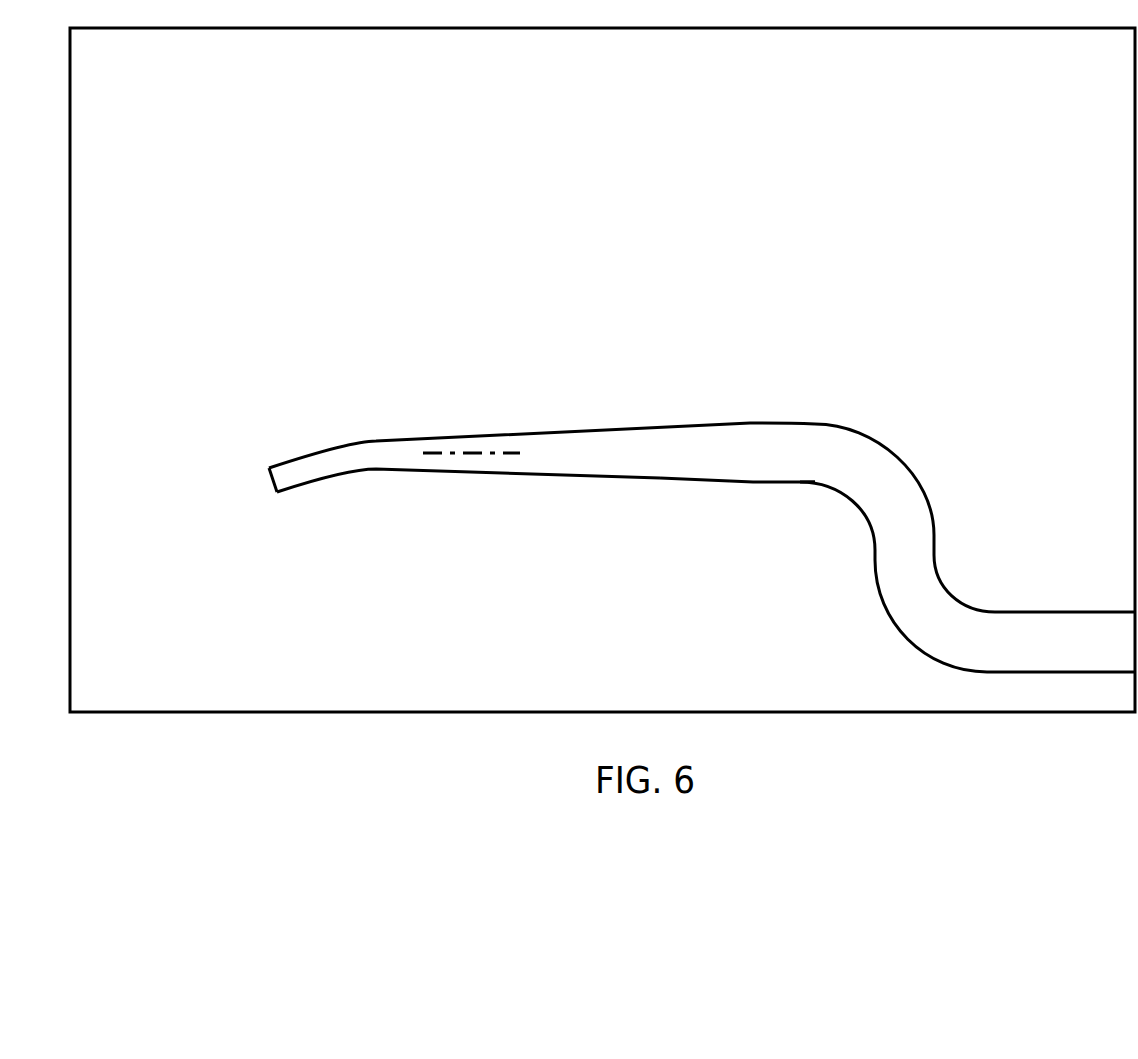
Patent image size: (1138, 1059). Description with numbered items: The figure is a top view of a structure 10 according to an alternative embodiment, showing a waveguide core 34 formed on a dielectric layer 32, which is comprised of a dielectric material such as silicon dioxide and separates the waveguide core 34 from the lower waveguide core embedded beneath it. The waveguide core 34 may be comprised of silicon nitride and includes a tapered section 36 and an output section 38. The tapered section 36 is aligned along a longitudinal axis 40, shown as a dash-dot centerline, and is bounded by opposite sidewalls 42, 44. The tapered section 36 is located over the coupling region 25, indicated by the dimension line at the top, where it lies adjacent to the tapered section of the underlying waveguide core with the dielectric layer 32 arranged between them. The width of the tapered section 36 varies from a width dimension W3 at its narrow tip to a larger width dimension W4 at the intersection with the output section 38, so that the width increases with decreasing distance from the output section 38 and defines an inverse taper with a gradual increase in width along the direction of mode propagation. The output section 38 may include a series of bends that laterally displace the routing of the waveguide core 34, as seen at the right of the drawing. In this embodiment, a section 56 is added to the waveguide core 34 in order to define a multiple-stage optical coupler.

The catheter / medical device 10 is at (1028, 135).
The coupling region 25 is at (379, 140).
The dielectric layer 32 is at (152, 661).
The waveguide core 34 is at (368, 327).
The tapered section 36 is at (623, 453).
The output section 38 is at (916, 542).
The longitudinal axis 40 is at (457, 455).
The sidewall 42 is at (623, 430).
The sidewall 44 is at (691, 480).
The section 56 is at (783, 462).
The width dimension W3 is at (376, 385).
The width dimension W4 is at (815, 372).